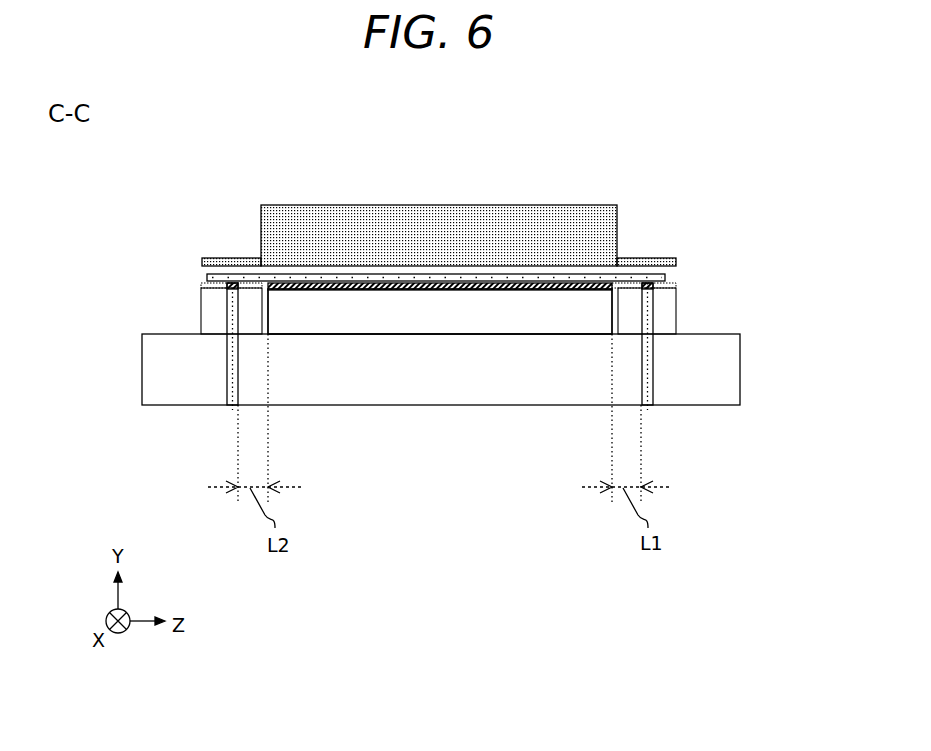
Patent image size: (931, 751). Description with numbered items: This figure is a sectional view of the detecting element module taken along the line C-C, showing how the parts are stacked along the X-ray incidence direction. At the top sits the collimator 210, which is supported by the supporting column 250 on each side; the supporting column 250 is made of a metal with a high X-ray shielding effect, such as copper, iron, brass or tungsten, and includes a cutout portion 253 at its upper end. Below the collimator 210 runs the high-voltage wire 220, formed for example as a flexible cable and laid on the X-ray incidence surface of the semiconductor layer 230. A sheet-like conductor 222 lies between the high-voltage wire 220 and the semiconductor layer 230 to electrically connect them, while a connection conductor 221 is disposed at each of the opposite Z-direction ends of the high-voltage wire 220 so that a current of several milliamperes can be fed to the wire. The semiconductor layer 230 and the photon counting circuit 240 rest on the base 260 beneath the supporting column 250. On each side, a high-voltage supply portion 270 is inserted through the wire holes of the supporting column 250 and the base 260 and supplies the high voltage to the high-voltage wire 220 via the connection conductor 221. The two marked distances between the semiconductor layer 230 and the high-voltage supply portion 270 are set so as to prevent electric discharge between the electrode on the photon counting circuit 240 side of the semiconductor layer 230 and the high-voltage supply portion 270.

The collimator 210 is at (625, 273).
The high-voltage wire 220 is at (367, 278).
The connection conductor 221 is at (202, 287).
The sheet-like conductor 222 is at (470, 285).
The semiconductor layer 230 is at (463, 325).
The photon counting circuit 240 is at (463, 325).
The supporting column 250 is at (213, 322).
The cutout portion 253 is at (217, 270).
The base 260 is at (700, 373).
The high-voltage supply portion 270 is at (232, 405).